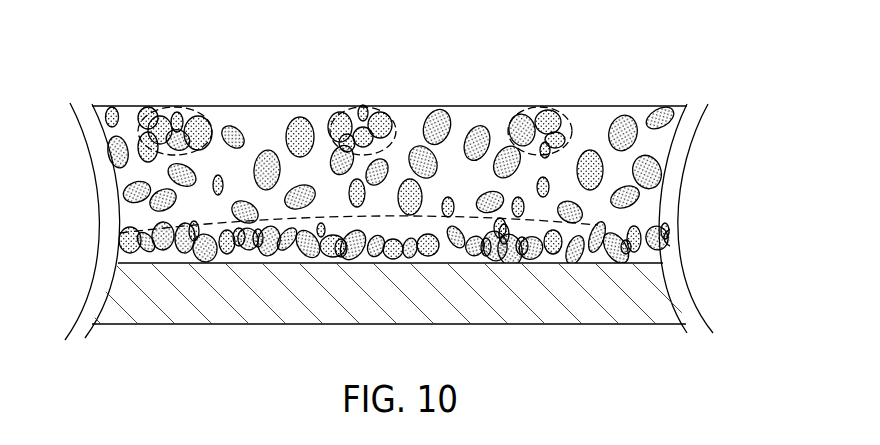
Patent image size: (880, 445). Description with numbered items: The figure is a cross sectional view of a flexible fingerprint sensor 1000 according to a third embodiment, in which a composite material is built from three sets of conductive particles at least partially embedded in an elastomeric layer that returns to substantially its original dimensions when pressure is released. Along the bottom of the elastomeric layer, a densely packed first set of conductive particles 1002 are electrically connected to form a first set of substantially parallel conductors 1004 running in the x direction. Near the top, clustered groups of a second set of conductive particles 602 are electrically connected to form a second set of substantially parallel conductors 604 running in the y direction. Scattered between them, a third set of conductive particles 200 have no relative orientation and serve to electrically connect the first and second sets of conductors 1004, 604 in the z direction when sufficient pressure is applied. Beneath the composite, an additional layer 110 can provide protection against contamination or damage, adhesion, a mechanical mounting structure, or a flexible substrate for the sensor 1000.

The flexible fingerprint sensor 1000 is at (662, 35).
The additional layer 110 is at (128, 291).
The third set of conductive particles 200 is at (130, 189).
The second set of conductive particles 602 is at (167, 127).
The second set of substantially parallel conductors 604 is at (188, 110).
The first set of conductive particles 1002 is at (153, 222).
The first set of substantially parallel conductors 1004 is at (598, 225).